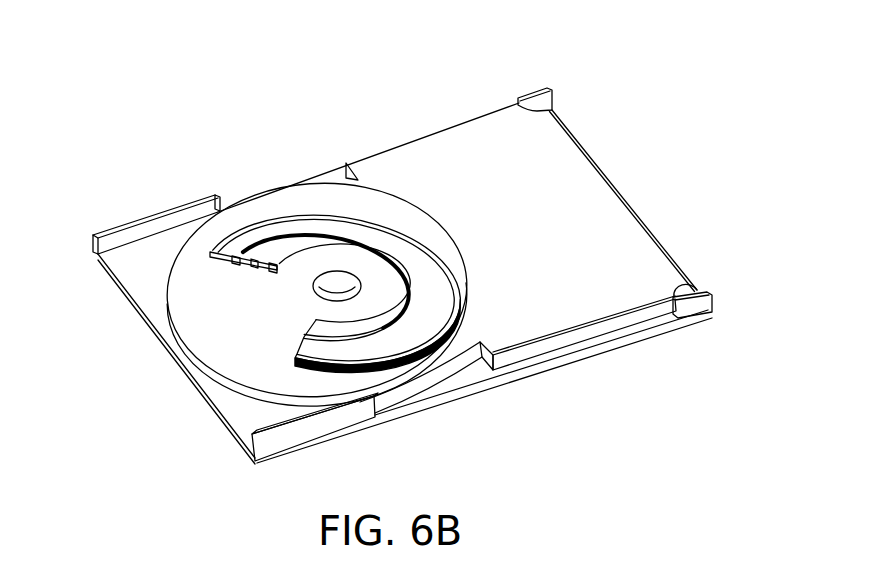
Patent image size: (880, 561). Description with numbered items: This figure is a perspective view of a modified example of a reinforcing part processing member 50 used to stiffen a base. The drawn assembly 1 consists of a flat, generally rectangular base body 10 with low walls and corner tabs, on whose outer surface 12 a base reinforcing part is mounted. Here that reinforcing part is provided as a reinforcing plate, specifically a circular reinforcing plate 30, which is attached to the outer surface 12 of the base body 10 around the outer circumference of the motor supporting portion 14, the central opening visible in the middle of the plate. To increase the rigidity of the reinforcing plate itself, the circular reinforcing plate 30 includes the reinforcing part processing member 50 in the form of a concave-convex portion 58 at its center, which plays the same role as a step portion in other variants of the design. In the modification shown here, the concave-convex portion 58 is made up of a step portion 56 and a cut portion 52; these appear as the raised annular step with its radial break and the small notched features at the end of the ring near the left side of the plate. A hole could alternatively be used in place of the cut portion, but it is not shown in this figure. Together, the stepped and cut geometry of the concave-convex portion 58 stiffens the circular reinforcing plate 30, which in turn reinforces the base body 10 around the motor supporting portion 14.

The disk drive apparatus 1 is at (422, 72).
The base body 10 is at (516, 363).
The outer surface 12 is at (585, 215).
The motor supporting portion 14 is at (322, 287).
The circular reinforcing plate 30 is at (338, 222).
The reinforcing part processing member 50 is at (198, 135).
The cut portion 52 is at (213, 257).
The concave-convex portion 58 is at (253, 267).
The step portion 56 is at (272, 270).